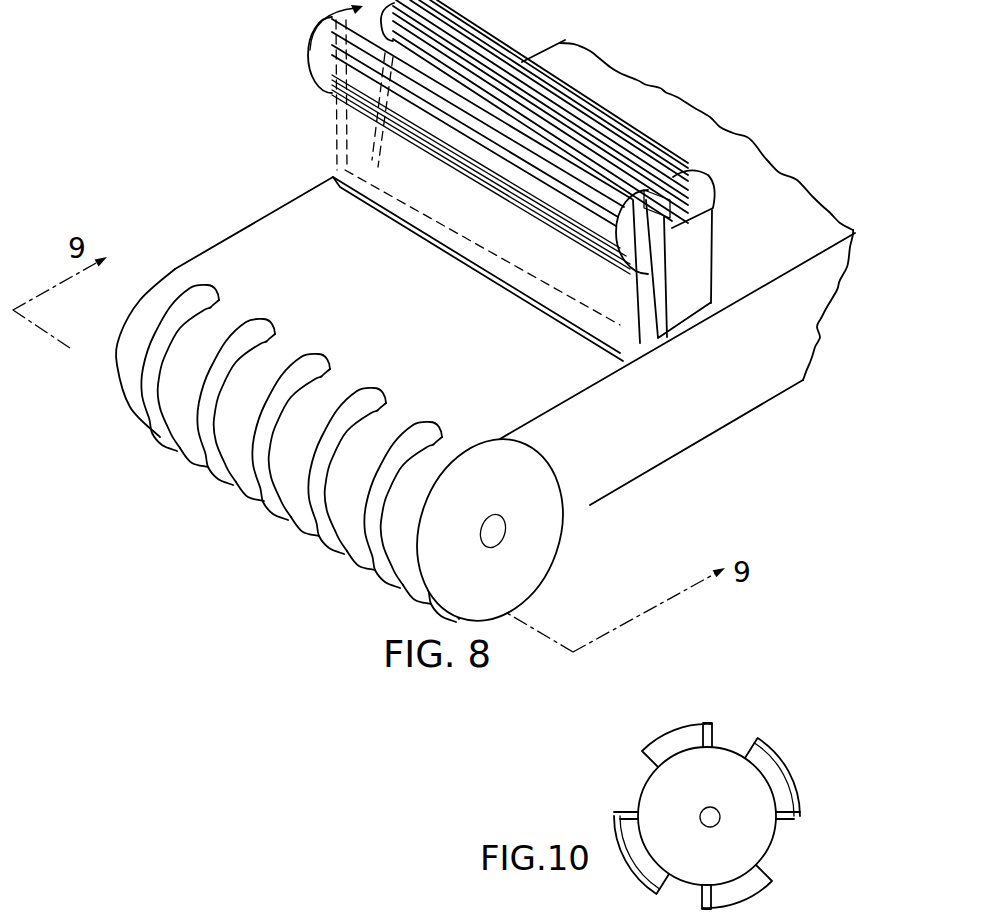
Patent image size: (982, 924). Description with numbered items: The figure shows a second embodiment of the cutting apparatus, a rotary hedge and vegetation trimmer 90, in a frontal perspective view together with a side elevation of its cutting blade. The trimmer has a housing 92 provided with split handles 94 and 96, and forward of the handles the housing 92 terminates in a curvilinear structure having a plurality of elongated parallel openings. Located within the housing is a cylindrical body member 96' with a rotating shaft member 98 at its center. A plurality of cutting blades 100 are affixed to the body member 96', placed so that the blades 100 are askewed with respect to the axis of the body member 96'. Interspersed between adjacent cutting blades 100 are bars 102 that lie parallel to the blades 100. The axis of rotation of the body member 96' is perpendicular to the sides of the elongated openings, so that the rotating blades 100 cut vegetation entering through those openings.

In FIG. 8, the rotary hedge, vegetation trimmer 90 is at (716, 475).
In FIG. 8, the housing 92 is at (750, 365).
In FIG. 8, the split handle 94 is at (627, 100).
In FIG. 8, the split handle 96 is at (511, 183).
In FIG. 8, the cylindrical body member 96' is at (534, 529).
In FIG. 10, the cylindrical body member 96' is at (735, 816).
In FIG. 8, the rotating shaft member 98 is at (484, 521).
In FIG. 10, the rotating shaft member 98 is at (700, 817).
In FIG. 10, the cutting blade 100 is at (702, 906).
In FIG. 10, the bar 102 is at (807, 816).